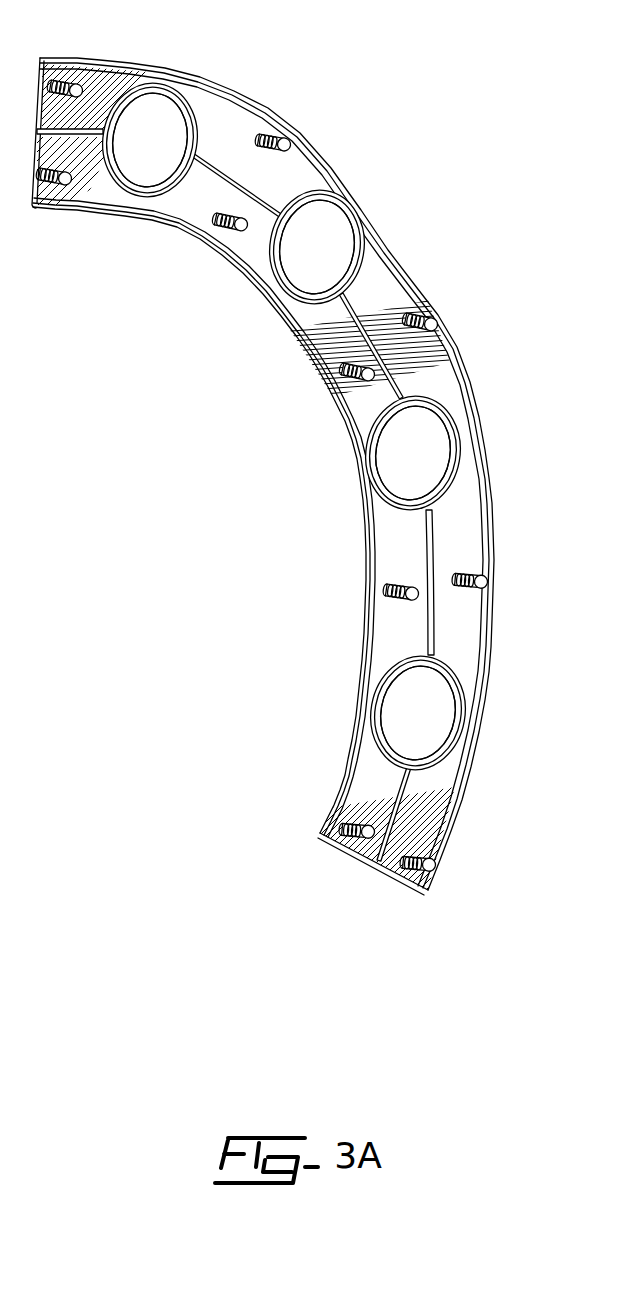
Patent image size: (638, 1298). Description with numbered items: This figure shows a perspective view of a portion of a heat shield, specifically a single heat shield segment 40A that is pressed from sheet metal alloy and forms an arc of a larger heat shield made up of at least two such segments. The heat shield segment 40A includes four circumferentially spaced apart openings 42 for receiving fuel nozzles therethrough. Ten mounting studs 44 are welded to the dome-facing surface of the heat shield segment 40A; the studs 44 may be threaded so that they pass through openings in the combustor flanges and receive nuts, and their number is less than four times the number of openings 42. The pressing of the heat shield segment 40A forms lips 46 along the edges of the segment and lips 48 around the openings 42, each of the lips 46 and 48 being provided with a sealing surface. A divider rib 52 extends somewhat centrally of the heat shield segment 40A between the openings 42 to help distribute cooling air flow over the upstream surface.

The heat shield segment 40A is at (299, 448).
The opening 42 is at (178, 138).
The mounting stud 44 is at (79, 85).
The lip 46 is at (345, 775).
The lip 48 is at (196, 95).
The divider rib 52 is at (432, 632).